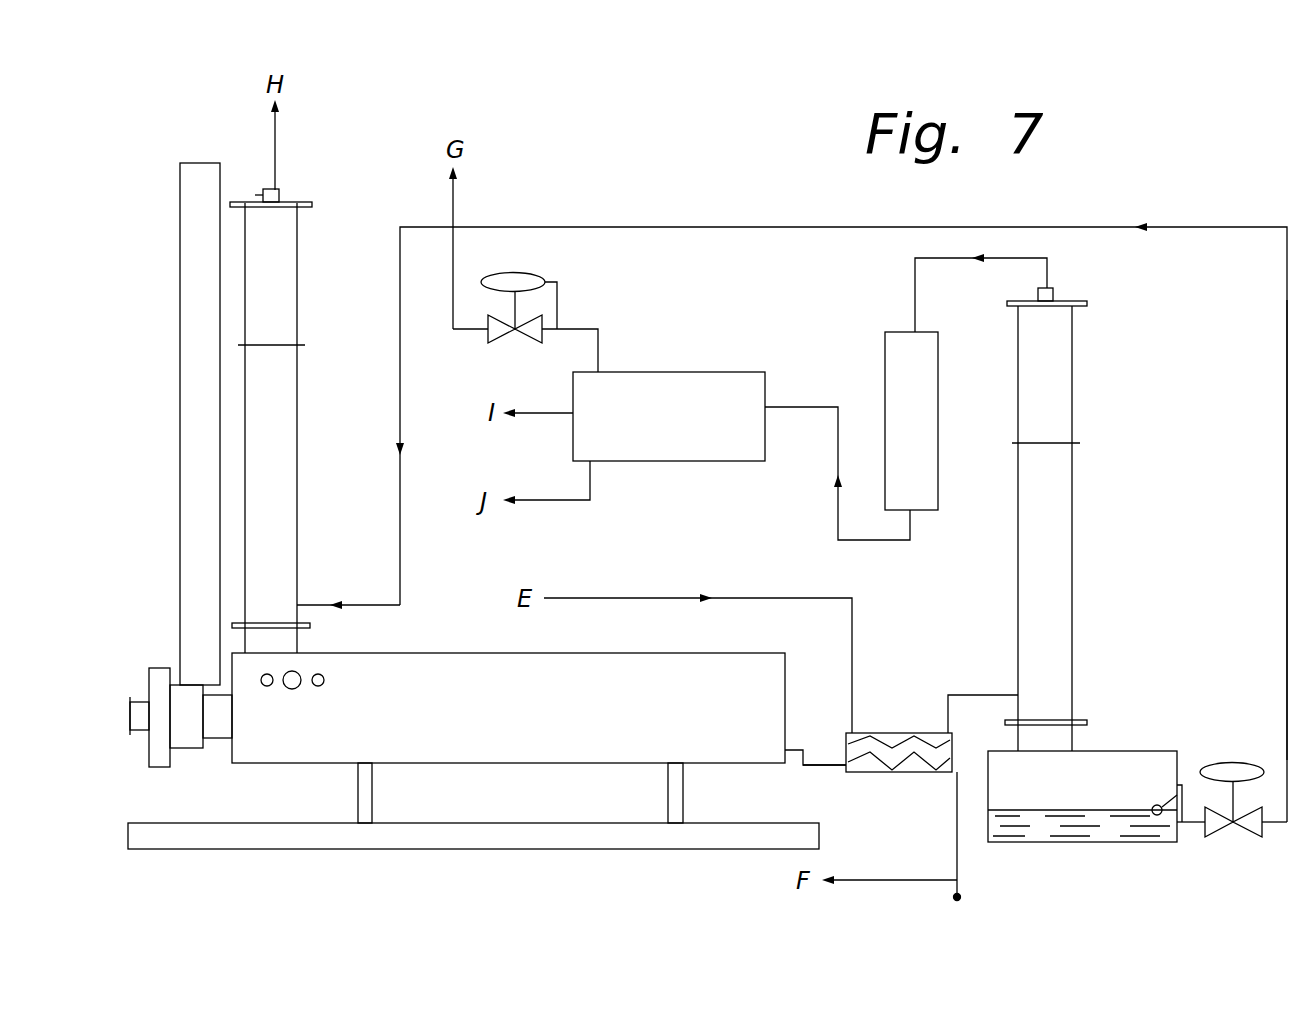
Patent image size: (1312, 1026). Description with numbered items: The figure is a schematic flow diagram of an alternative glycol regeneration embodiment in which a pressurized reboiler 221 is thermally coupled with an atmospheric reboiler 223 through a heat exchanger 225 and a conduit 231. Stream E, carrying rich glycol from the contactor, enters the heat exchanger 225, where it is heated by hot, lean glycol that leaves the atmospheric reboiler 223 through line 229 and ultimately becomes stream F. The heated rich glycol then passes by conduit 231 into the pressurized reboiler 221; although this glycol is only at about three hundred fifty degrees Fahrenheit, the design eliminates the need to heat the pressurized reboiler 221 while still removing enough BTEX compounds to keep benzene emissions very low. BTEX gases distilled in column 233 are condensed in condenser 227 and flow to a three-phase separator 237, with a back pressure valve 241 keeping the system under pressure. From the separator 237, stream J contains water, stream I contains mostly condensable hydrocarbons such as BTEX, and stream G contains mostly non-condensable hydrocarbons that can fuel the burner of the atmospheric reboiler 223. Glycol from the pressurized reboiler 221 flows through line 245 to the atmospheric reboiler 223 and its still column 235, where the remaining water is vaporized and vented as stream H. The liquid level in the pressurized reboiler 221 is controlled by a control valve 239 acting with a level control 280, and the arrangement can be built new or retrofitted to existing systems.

The pressurized reboiler 221 is at (1108, 765).
The atmospheric reboiler 223 is at (240, 682).
The heat exchanger 225 is at (864, 722).
The condenser 227 is at (897, 330).
The line 229 is at (826, 766).
The conduit 231 is at (988, 693).
The column 233 is at (1072, 483).
The still column 235 is at (298, 392).
The three-phase separator 237 is at (685, 372).
The control valve 239 is at (1216, 763).
The back pressure valve 241 is at (528, 276).
The line 245 is at (1287, 518).
The level control 280 is at (1181, 812).